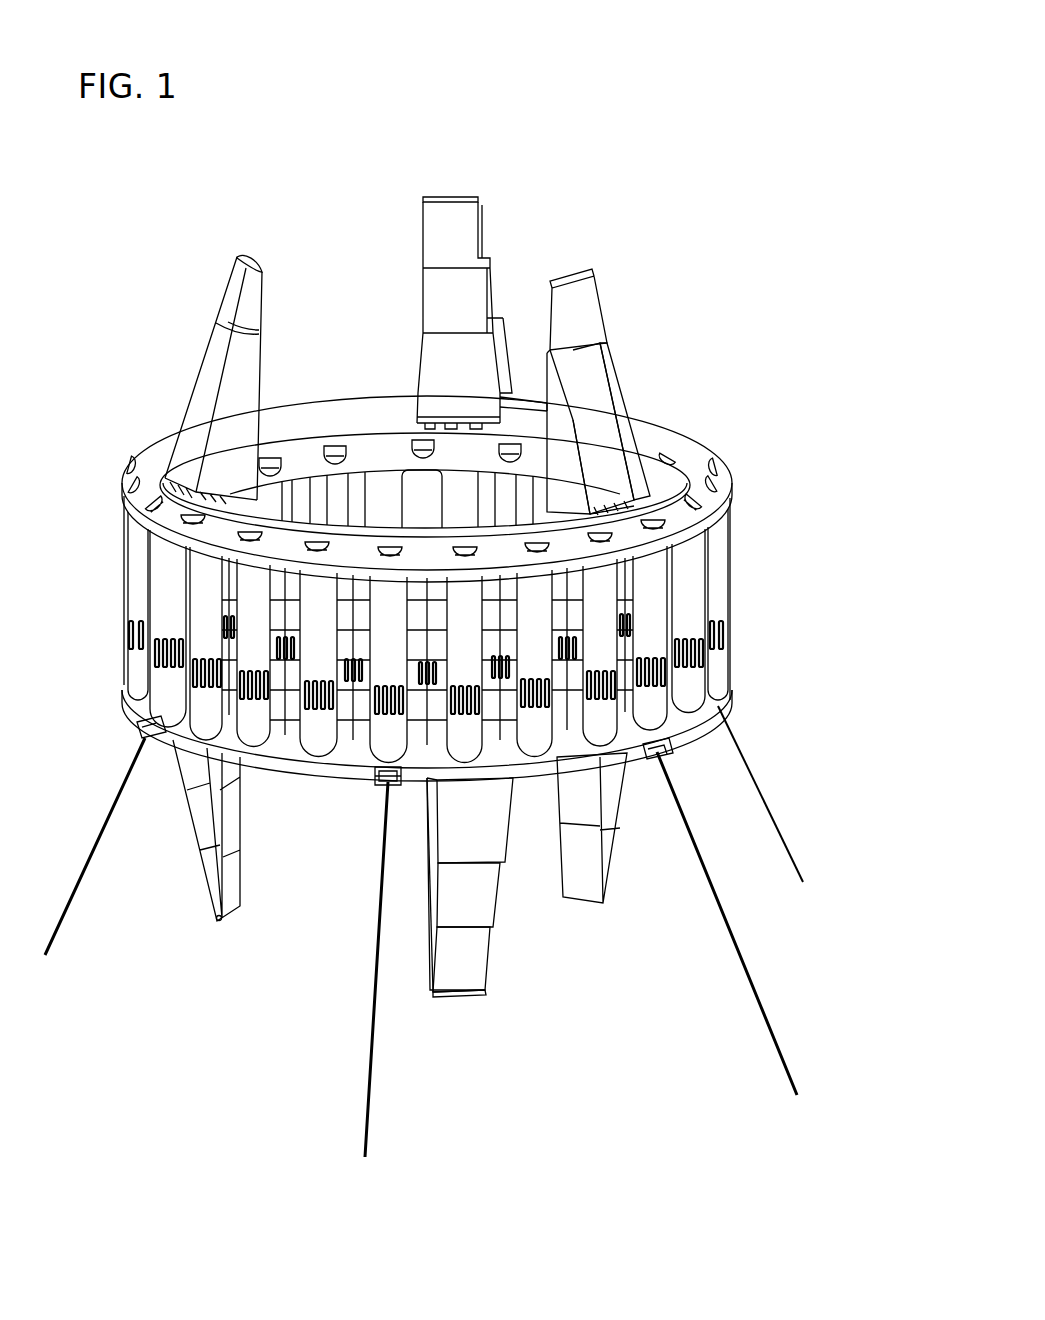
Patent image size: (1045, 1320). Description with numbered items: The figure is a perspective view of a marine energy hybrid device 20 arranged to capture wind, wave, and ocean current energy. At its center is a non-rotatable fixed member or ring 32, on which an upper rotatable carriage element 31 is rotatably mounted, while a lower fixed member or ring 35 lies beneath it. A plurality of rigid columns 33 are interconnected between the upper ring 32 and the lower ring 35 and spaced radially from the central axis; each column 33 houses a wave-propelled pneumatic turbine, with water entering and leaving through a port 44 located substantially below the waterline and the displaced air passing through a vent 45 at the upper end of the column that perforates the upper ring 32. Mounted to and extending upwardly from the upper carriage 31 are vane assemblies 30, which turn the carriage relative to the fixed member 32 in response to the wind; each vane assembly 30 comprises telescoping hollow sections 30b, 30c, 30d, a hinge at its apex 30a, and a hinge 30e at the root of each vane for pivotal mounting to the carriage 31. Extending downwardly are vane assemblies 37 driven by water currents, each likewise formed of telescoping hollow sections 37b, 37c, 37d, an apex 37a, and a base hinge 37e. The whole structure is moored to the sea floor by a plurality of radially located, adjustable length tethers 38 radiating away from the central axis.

The marine energy hybrid device 20 is at (353, 128).
The vane assembly 30 is at (404, 284).
The apex 30a is at (583, 262).
The hollow section 30b is at (606, 405).
The hollow section 30c is at (637, 480).
The hollow section 30d is at (650, 498).
The hinge at the root or base of each individual vane 30e is at (667, 478).
The upper rotatable carriage element 31 is at (372, 412).
The fixed member or ring 32 is at (152, 458).
The rigid column 33 is at (165, 610).
The lower fixed member or ring 35 is at (335, 790).
The vane assembly 37 is at (187, 832).
The apex 37a is at (470, 992).
The hollow section 37b is at (490, 930).
The hollow section 37c is at (498, 928).
The hollow section 37d is at (500, 860).
The hinge 37e is at (490, 782).
The tether 38 is at (62, 928).
The port 44 is at (692, 666).
The vent 45 is at (702, 509).